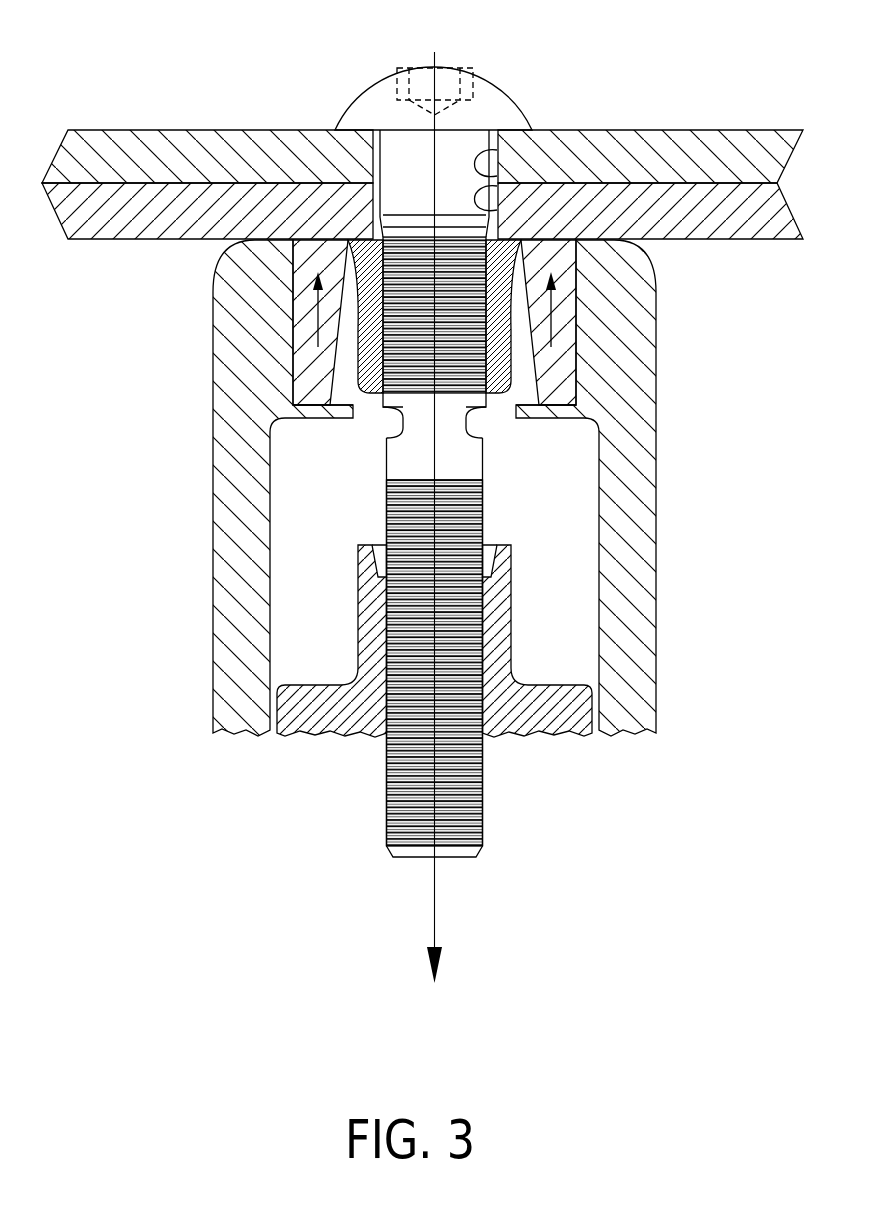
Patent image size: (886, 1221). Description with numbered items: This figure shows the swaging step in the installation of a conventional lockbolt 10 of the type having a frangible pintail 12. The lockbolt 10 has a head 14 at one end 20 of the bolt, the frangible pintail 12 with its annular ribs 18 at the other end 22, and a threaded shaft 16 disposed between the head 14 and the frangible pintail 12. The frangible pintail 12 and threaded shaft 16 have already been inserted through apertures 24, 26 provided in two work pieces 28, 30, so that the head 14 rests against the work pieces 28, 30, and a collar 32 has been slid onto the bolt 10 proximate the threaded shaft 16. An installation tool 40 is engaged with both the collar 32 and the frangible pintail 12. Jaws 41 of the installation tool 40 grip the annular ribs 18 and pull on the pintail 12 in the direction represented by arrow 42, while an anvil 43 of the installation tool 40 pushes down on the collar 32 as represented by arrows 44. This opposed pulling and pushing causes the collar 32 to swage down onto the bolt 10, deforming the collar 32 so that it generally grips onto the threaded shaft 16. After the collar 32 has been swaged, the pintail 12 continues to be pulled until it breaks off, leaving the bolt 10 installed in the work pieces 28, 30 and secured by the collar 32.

The lockbolt 10 is at (360, 441).
The frangible pintail 12 is at (495, 797).
The head 14 is at (500, 110).
The threaded shaft 16 is at (352, 348).
The annular ribs 18 is at (385, 788).
The one end 20 is at (478, 68).
The other end 22 is at (460, 857).
The aperture 24 is at (488, 158).
The aperture 26 is at (485, 196).
The work piece 28 is at (267, 122).
The work piece 30 is at (119, 250).
The collar 32 is at (528, 270).
The installation tool 40 is at (670, 399).
The jaws 41 is at (520, 603).
The arrow 42 is at (435, 940).
The anvil 43 is at (272, 386).
The arrows 44 is at (318, 322).